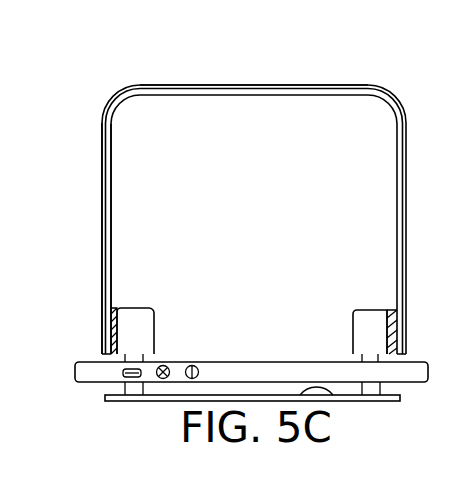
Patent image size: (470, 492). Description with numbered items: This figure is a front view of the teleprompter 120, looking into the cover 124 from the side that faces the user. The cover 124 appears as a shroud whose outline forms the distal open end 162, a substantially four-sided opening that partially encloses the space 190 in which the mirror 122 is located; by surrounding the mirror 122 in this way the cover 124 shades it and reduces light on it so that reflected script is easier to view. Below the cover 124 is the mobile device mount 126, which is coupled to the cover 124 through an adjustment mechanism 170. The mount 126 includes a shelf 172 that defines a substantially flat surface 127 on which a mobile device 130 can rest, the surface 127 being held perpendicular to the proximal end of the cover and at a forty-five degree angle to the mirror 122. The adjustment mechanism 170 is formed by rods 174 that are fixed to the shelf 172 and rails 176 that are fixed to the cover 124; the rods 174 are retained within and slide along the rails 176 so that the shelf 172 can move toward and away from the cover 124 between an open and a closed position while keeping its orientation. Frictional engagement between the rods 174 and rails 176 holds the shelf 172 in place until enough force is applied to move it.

The teleprompter 120 is at (327, 65).
The mirror 122 is at (133, 152).
The cover 124 is at (136, 87).
The mobile device mount 126 is at (400, 404).
The substantially flat surface 127 is at (334, 394).
The mobile device 130 is at (74, 385).
The distal open end 162 is at (120, 222).
The adjustment mechanism 170 is at (152, 303).
The shelf 172 is at (152, 402).
The rods 174 is at (133, 387).
The rails 176 is at (131, 323).
The space 190 is at (263, 211).